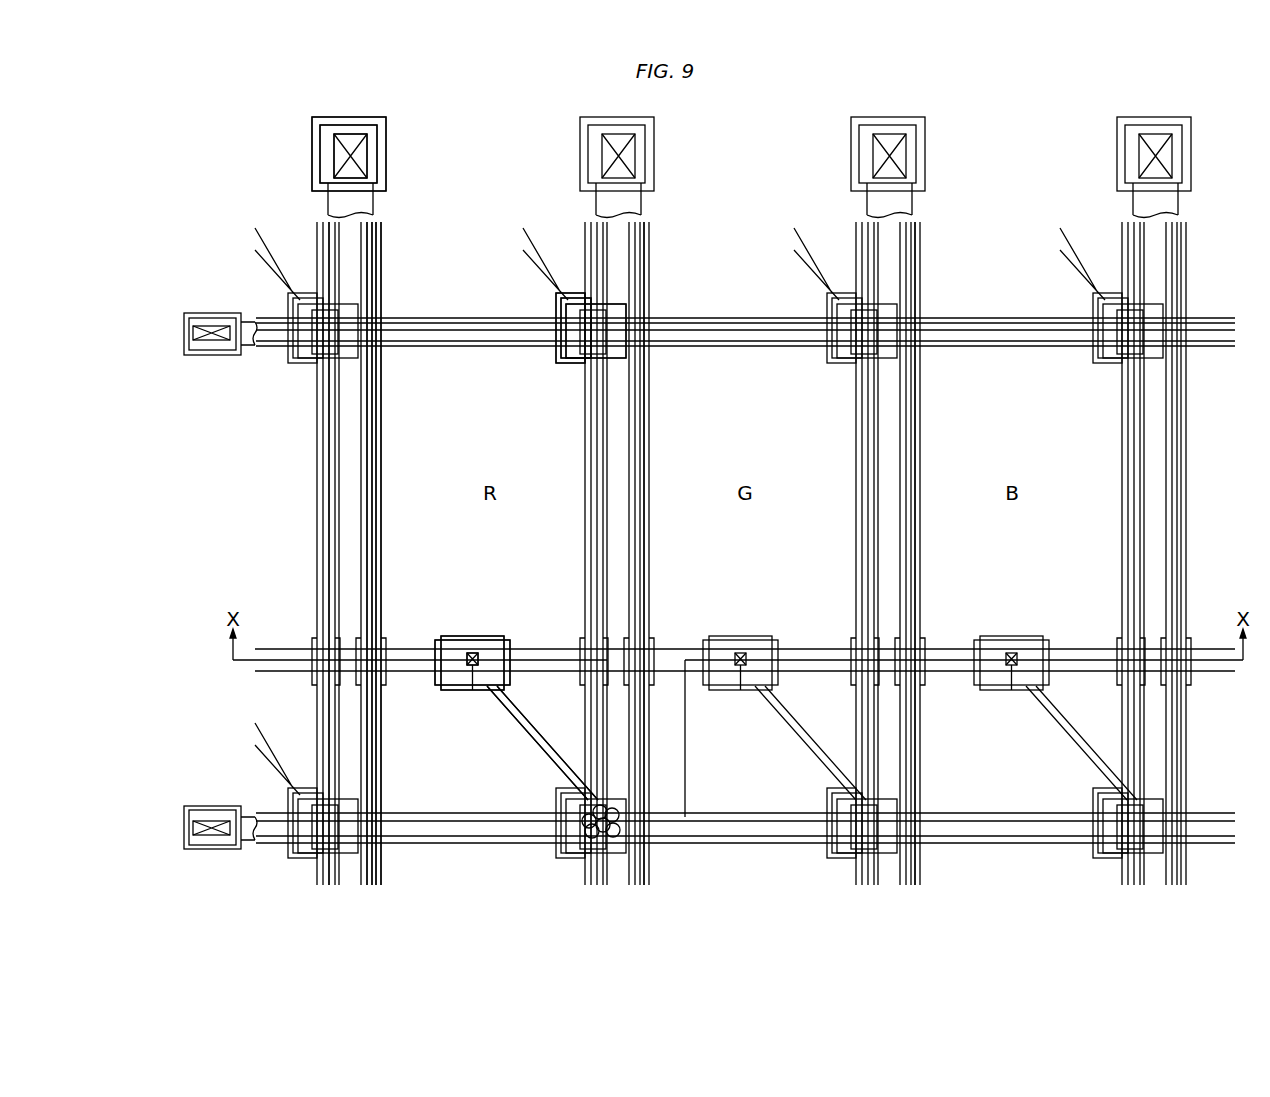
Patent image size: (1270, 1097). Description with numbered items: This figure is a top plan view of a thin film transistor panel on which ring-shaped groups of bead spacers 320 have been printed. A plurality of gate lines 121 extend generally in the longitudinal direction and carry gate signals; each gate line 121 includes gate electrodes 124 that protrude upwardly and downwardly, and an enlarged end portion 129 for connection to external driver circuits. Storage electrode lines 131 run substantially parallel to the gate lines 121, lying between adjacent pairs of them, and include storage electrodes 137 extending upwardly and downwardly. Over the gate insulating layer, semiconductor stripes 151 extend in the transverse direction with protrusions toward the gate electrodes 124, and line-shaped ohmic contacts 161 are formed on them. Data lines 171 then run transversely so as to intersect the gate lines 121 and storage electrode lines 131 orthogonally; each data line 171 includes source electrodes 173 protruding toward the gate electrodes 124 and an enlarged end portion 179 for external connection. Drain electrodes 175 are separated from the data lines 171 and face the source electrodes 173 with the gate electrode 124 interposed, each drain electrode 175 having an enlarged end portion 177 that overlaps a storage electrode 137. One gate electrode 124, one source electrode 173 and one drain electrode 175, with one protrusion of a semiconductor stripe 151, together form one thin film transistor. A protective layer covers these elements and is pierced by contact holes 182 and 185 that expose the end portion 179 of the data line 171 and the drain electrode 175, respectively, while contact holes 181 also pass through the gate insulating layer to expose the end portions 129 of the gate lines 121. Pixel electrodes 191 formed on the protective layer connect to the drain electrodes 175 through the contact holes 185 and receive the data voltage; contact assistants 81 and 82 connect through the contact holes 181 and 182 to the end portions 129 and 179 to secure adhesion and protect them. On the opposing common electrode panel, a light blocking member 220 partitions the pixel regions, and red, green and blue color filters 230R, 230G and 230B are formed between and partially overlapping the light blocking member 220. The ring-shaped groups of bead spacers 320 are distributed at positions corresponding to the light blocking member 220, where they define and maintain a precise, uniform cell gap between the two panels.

The first contact hole 182 is at (350, 134).
The enlarged end portion 179 is at (312, 157).
The contact assistant 82 is at (386, 157).
The light blocking member 220 is at (383, 268).
The semiconductor stripe 151 is at (578, 300).
The gate line 121 is at (440, 320).
The end portion 129 is at (207, 313).
The contact assistant 81 is at (220, 328).
The second contact hole 181 is at (205, 355).
The gate electrode 124 is at (565, 362).
The source electrode 173 is at (580, 365).
The line-shaped ohmic contact 161 is at (375, 397).
The data line 171 is at (330, 425).
The pixel electrode 191 is at (368, 458).
The red color filter 230R is at (381, 525).
The green color filter 230G is at (650, 525).
The blue color filter 230B is at (920, 525).
The enlarged end portion 177 is at (445, 636).
The first contact hole 185 is at (474, 652).
The storage electrode 137 is at (506, 638).
The storage electrode line 131 is at (665, 649).
The drain electrode 175 is at (540, 750).
The bead spacer 320 is at (616, 810).